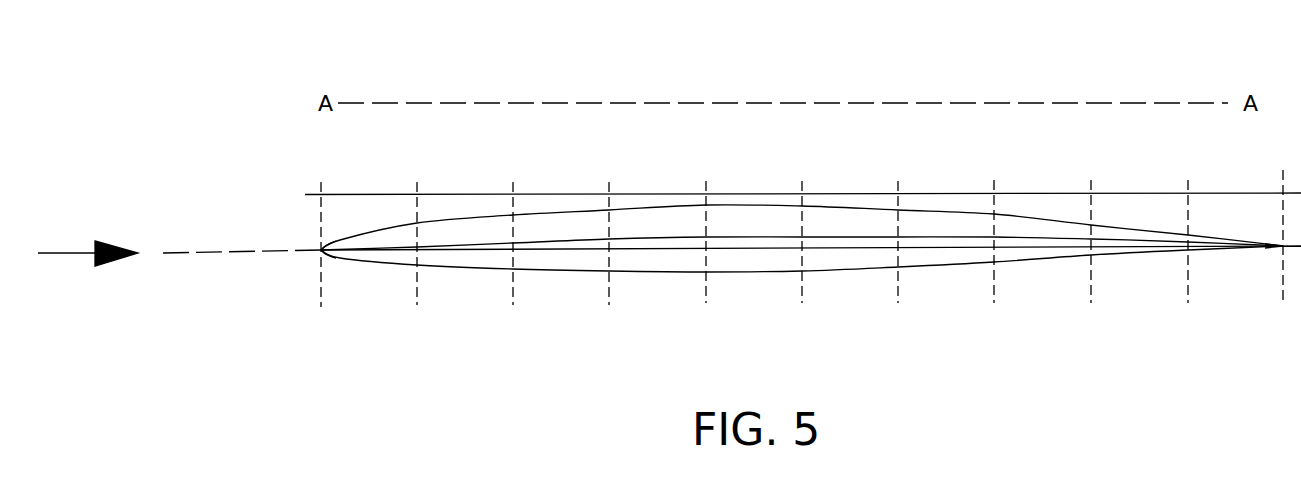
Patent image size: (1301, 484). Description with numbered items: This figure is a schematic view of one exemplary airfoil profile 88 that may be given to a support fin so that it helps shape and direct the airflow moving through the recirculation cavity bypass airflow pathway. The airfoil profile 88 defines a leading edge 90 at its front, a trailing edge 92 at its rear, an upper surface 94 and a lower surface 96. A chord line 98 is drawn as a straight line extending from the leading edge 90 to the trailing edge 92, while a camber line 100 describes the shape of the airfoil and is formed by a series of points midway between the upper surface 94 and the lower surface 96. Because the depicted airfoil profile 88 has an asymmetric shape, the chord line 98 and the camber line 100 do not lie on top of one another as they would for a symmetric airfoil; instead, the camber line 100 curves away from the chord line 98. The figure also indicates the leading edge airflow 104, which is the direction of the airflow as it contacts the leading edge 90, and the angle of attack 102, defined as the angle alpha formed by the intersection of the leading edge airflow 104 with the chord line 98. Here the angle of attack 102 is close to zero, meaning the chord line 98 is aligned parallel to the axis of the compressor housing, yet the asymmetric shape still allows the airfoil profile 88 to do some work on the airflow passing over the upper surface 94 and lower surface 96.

The airfoil profile 88 is at (466, 181).
The leading edge 90 is at (320, 250).
The trailing edge 92 is at (1281, 246).
The upper surface 94 is at (752, 205).
The lower surface 96 is at (842, 272).
The chord line 98 is at (243, 253).
The camber line 100 is at (582, 240).
The angle of attack 102 is at (143, 180).
The leading edge airflow 104 is at (60, 255).